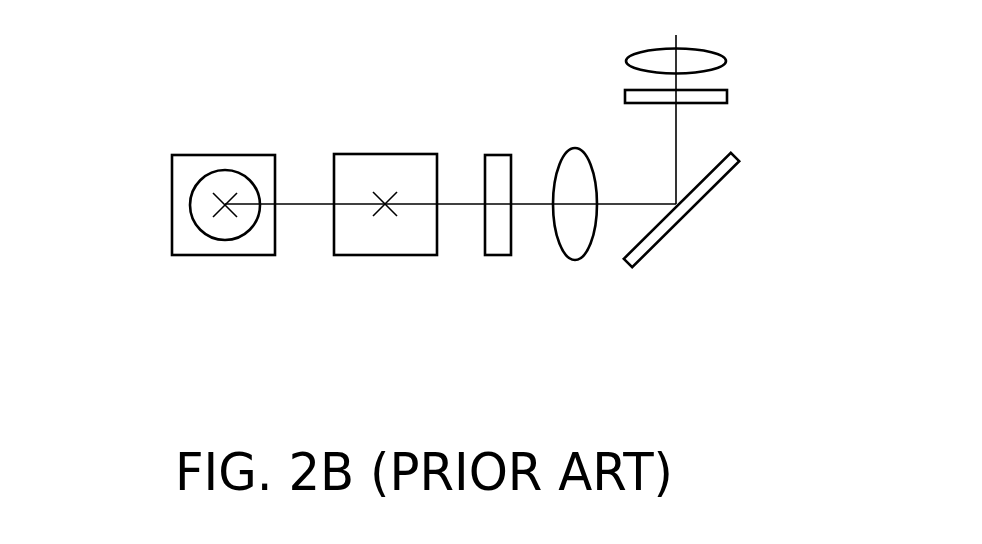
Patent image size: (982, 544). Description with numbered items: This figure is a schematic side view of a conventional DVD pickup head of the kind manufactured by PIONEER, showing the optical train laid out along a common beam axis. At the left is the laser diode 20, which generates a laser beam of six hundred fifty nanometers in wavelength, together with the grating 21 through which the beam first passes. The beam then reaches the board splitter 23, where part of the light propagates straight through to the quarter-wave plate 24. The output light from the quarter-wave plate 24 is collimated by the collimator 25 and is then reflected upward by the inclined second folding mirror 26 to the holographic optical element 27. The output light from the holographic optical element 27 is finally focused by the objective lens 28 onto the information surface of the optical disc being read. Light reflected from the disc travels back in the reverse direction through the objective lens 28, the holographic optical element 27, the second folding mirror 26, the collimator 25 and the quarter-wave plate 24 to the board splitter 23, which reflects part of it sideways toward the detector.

The laser diode 20 is at (172, 238).
The grating 21 is at (195, 186).
The board splitter 23 is at (365, 256).
The quarter-wave plate 24 is at (495, 256).
The collimator 25 is at (578, 260).
The second folding mirror 26 is at (725, 182).
The holographic optical element (HOE) 27 is at (728, 97).
The objective lens 28 is at (715, 50).